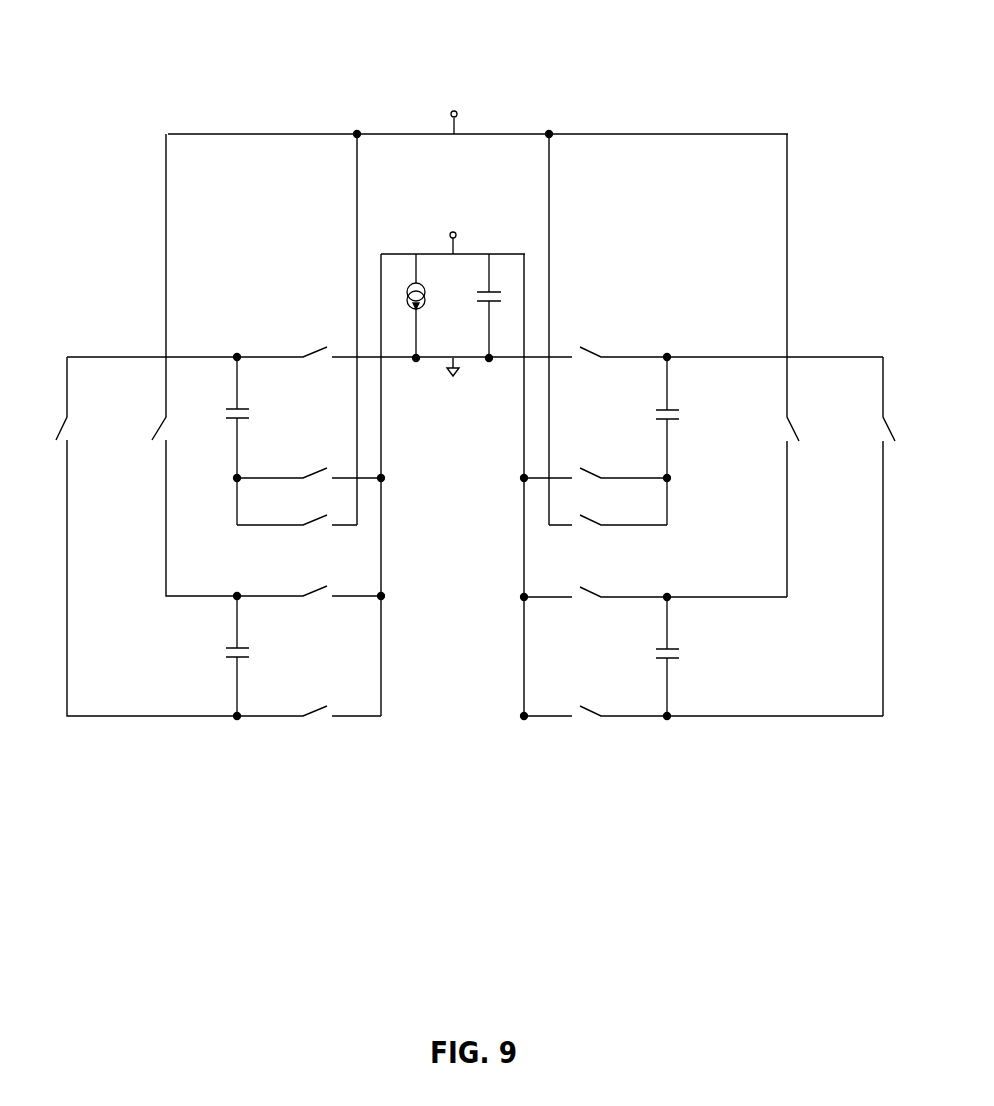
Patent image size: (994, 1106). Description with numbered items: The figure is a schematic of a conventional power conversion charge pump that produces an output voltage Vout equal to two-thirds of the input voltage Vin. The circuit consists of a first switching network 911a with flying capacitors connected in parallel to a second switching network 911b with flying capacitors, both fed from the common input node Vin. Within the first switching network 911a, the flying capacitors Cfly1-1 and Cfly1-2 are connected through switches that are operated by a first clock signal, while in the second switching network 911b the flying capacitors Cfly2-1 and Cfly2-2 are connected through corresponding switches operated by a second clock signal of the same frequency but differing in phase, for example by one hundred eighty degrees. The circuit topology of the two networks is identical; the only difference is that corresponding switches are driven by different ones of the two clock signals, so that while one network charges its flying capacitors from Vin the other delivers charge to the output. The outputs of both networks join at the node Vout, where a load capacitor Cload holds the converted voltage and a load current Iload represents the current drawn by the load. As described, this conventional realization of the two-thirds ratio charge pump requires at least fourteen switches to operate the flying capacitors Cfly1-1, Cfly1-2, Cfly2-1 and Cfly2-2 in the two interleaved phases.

The first switching network 911a is at (209, 372).
The second switching network 911b is at (720, 374).
The flying capacitor Cfly1-1 is at (255, 441).
The flying capacitor Cfly1-2 is at (255, 656).
The flying capacitor Cfly2-1 is at (648, 441).
The flying capacitor Cfly2-2 is at (648, 656).
The load capacitor Cload is at (500, 306).
The load current Iload is at (428, 306).
The input voltage Vin is at (454, 116).
The output voltage Vout is at (453, 236).